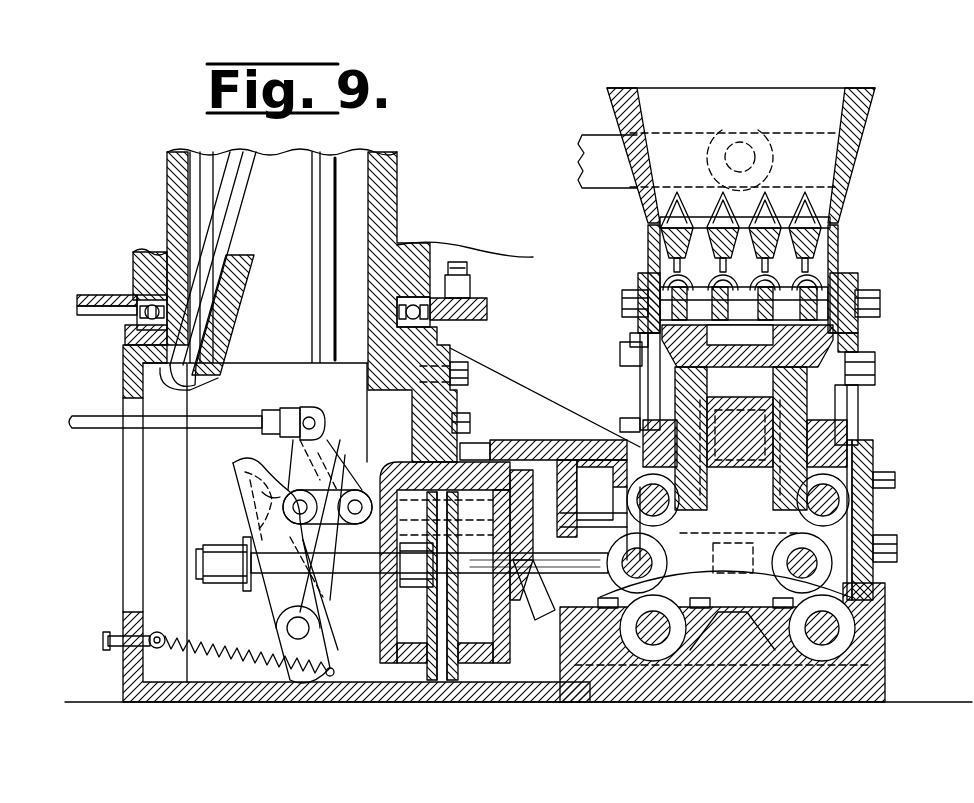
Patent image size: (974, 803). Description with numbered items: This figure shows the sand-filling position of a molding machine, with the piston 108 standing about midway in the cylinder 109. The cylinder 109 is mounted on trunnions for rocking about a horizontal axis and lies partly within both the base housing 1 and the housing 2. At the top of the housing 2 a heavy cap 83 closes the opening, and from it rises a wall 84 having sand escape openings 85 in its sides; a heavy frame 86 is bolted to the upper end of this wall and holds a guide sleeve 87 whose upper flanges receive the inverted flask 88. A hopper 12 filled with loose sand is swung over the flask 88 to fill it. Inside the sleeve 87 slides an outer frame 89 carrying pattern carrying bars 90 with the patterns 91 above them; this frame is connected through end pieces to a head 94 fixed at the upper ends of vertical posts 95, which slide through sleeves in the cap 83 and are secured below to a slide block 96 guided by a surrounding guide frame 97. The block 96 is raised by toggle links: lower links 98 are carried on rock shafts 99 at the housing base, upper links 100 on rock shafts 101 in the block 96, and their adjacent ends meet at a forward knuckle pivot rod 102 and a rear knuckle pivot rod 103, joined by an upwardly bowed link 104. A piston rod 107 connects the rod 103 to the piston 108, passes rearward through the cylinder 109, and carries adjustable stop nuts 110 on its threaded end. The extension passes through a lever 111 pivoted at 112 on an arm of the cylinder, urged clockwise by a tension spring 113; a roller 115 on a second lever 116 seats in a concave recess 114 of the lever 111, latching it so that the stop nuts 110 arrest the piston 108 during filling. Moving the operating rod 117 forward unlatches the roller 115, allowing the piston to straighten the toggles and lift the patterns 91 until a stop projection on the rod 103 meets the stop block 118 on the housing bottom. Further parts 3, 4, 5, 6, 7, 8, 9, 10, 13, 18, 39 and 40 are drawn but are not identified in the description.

The base housing 1 is at (238, 692).
The housing 2 is at (565, 685).
The housing 3 is at (468, 377).
The bolt 4 is at (457, 398).
The frame 5 is at (392, 190).
The cap 6 is at (145, 252).
The bearing 7 is at (140, 300).
The bearing 8 is at (432, 327).
The bracket 9 is at (503, 265).
The plate 10 is at (606, 190).
The hopper 12 is at (858, 161).
The opening 13 is at (742, 150).
The arm 18 is at (77, 306).
The rod 39 is at (238, 218).
The sleeve 40 is at (228, 328).
The heavy cap 83 is at (850, 414).
The wall 84 is at (850, 373).
The sand escape openings 85 is at (642, 388).
The heavy frame 86 is at (850, 322).
The guide sleeve 87 is at (848, 293).
The flask 88 is at (838, 238).
The outer frame 89 is at (640, 292).
The pattern carrying bars 90 is at (643, 300).
The patterns 91 is at (667, 270).
The head 94 is at (647, 332).
The vertical rods or posts 95 is at (780, 384).
The slide block 96 is at (864, 473).
The guide frame 97 is at (866, 507).
The links 98 is at (635, 580).
The rock shafts 99 is at (652, 647).
The links 100 is at (580, 517).
The rock shafts 101 is at (672, 498).
The forward knuckle pivot rod 102 is at (877, 580).
The rear knuckle pivot rod 103 is at (575, 598).
The link 104 is at (740, 542).
The piston rod 107 is at (486, 578).
The piston 108 is at (448, 655).
The cylinder 109 is at (403, 650).
The stop nuts 110 is at (225, 545).
The lever 111 is at (275, 580).
The pivot 112 is at (293, 640).
The tension spring 113 is at (207, 663).
The concave recess 114 is at (262, 492).
The roller 115 is at (290, 470).
The lever 116 is at (333, 432).
The operating rod 117 is at (207, 420).
The stop block 118 is at (740, 593).